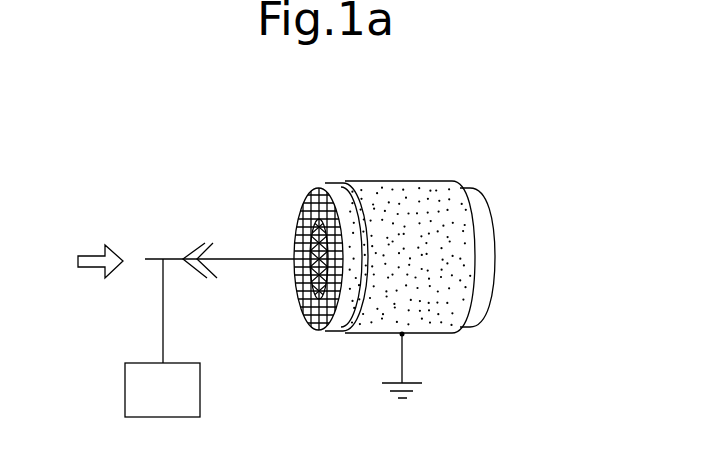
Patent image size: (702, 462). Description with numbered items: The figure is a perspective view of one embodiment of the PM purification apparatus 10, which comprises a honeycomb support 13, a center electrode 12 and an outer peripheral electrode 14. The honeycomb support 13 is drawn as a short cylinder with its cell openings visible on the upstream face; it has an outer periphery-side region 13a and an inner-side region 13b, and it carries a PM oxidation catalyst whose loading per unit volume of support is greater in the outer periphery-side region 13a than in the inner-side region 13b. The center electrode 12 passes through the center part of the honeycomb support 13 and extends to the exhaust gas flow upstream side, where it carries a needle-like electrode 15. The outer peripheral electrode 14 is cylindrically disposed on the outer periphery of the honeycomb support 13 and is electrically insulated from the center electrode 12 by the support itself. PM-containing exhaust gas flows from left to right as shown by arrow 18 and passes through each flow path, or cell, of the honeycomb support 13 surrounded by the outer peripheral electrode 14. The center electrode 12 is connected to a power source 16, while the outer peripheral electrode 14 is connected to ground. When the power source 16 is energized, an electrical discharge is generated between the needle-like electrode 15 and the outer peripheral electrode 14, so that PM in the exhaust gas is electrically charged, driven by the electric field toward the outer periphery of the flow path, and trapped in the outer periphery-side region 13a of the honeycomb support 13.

The PM purification apparatus 10 is at (443, 153).
The center electrode 12 is at (252, 262).
The honeycomb support 13 is at (480, 298).
The outer periphery-side region 13a is at (307, 190).
The inner-side region 13b is at (307, 330).
The outer peripheral electrode 14 is at (457, 225).
The needle-like electrode 15 is at (212, 240).
The power source 16 is at (178, 403).
The arrow 18 is at (95, 260).